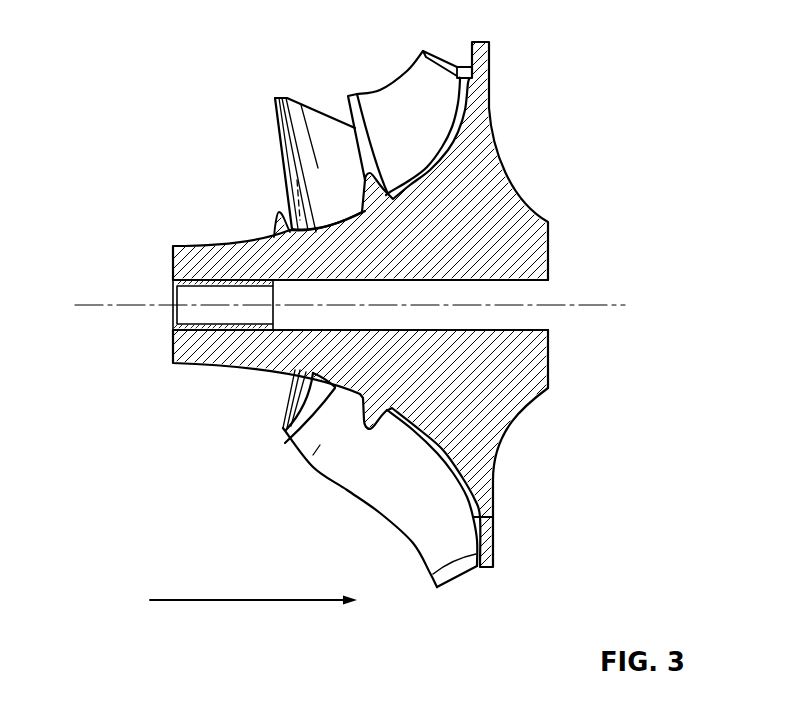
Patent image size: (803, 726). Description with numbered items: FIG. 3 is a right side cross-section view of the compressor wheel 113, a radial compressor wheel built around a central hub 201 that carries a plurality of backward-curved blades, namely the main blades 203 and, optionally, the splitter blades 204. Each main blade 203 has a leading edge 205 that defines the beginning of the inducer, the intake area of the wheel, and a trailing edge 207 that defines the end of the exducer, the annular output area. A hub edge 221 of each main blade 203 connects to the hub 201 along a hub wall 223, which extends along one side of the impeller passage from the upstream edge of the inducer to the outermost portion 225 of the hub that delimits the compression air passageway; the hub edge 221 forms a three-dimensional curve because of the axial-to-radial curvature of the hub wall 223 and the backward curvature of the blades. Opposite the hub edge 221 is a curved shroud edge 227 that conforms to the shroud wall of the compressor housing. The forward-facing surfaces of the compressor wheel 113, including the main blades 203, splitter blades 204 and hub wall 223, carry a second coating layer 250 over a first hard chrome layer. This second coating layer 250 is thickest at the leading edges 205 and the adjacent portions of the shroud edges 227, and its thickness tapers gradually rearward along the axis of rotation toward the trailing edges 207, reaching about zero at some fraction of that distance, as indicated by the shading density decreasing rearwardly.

The compressor wheel 113 is at (133, 108).
The hub 201 is at (480, 120).
The main blades 203 is at (318, 140).
The splitter blades 204 is at (410, 96).
The leading edge 205 is at (282, 155).
The trailing edge 207 is at (463, 577).
The hub edge 221 is at (478, 517).
The hub wall 223 is at (303, 445).
The outermost portion of the hub 225 is at (478, 42).
The shroud edge 227 is at (361, 502).
The second coating layer 250 is at (293, 126).